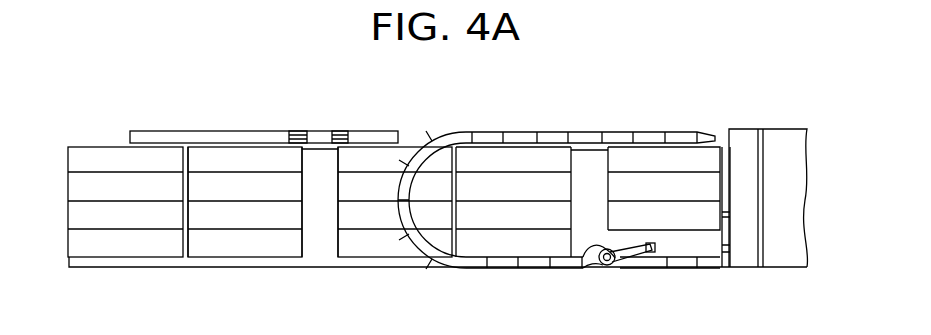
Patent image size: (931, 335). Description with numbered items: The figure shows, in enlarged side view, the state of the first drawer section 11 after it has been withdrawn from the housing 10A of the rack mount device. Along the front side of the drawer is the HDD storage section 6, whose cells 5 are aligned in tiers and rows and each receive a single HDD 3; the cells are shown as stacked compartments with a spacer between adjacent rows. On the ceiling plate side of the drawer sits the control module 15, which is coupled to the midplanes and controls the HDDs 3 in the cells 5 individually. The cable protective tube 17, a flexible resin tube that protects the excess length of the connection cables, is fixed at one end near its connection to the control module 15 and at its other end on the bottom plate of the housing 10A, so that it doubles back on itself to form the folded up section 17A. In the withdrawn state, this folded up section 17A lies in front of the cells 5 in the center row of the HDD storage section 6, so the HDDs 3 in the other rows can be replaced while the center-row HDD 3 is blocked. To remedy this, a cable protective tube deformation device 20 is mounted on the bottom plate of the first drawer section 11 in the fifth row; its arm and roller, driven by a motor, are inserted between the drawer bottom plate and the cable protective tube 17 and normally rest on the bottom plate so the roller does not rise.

The first drawer section 11 is at (91, 145).
The control module 15 is at (229, 136).
The cable protective tube 17 is at (536, 171).
The folded up section 17A is at (397, 183).
The housing 10A is at (783, 128).
The HDD storage section 6 is at (67, 211).
The HDD 3 is at (213, 244).
The cell 5 is at (300, 243).
The cable protective tube deformation device 20 is at (619, 273).